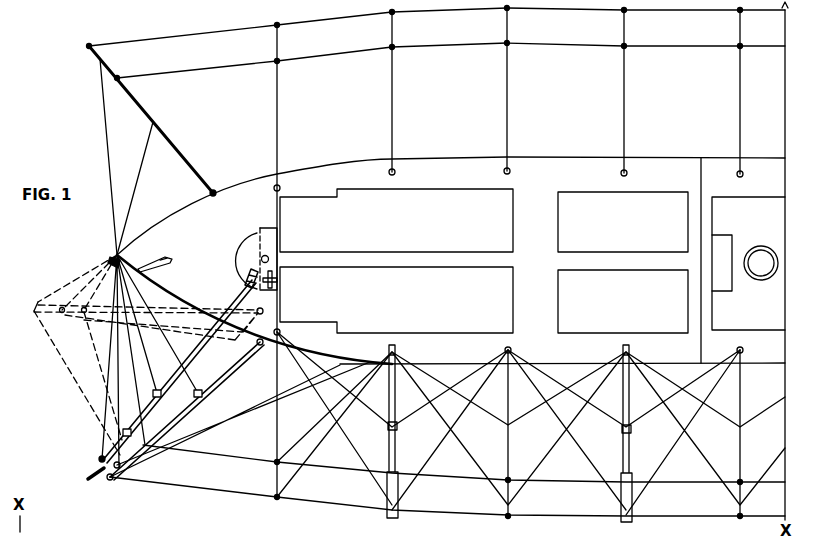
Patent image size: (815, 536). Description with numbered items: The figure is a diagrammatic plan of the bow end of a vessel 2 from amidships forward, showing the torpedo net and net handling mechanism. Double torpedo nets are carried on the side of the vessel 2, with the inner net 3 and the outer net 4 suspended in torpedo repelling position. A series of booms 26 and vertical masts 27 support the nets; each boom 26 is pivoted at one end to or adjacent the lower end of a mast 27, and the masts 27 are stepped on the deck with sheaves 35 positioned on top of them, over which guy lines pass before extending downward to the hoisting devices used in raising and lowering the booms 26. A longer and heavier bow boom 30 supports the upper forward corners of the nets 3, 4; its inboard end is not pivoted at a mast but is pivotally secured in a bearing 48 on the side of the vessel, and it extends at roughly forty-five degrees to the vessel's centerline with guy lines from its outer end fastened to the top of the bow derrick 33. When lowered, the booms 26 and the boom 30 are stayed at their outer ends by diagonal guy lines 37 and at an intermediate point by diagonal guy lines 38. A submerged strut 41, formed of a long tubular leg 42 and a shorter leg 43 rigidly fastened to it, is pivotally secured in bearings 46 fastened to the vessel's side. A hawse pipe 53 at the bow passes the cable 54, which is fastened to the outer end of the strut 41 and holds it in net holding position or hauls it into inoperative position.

The vessel 2 is at (484, 261).
The inner torpedo net 3 is at (581, 46).
The outer torpedo net 4 is at (548, 12).
The boom 26 is at (276, 112).
The vertical mast 27 is at (280, 191).
The bow boom 30 is at (179, 151).
The bow derrick 33 is at (268, 240).
The sheave 35 is at (397, 350).
The diagonal guy line 37 is at (347, 438).
The diagonal guy line 38 is at (531, 397).
The submerged strut 41 is at (110, 481).
The long tubular leg 42 is at (202, 396).
The shorter leg 43 is at (182, 413).
The bearing 46 is at (278, 330).
The bearing 48 is at (215, 192).
The hawse pipe 53 is at (68, 366).
The cable 54 is at (93, 346).